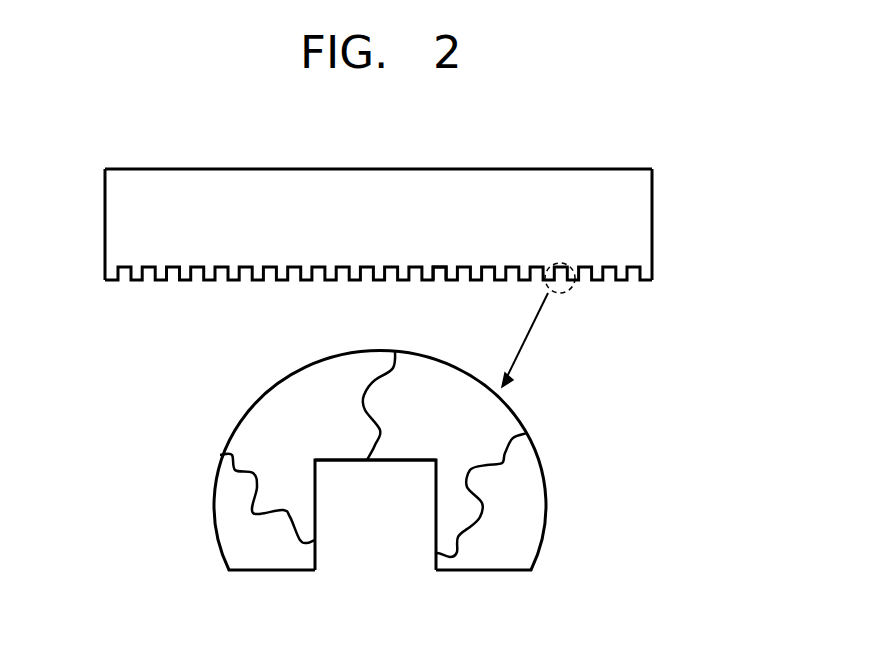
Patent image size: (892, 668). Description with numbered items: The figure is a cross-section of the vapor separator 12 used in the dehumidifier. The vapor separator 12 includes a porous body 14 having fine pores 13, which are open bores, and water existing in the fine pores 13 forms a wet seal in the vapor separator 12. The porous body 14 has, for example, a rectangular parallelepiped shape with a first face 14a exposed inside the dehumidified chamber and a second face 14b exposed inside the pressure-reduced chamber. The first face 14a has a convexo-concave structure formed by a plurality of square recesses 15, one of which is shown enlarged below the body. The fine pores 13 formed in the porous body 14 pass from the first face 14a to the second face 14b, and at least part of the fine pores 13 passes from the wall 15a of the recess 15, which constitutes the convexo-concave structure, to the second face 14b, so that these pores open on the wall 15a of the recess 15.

The vapor separator 12 is at (530, 137).
The fine pores 13 is at (524, 440).
The porous body 14 is at (652, 210).
The first face 14a is at (231, 282).
The second face 14b is at (228, 168).
The recess 15 is at (440, 277).
The wall of the recess 15a is at (315, 520).